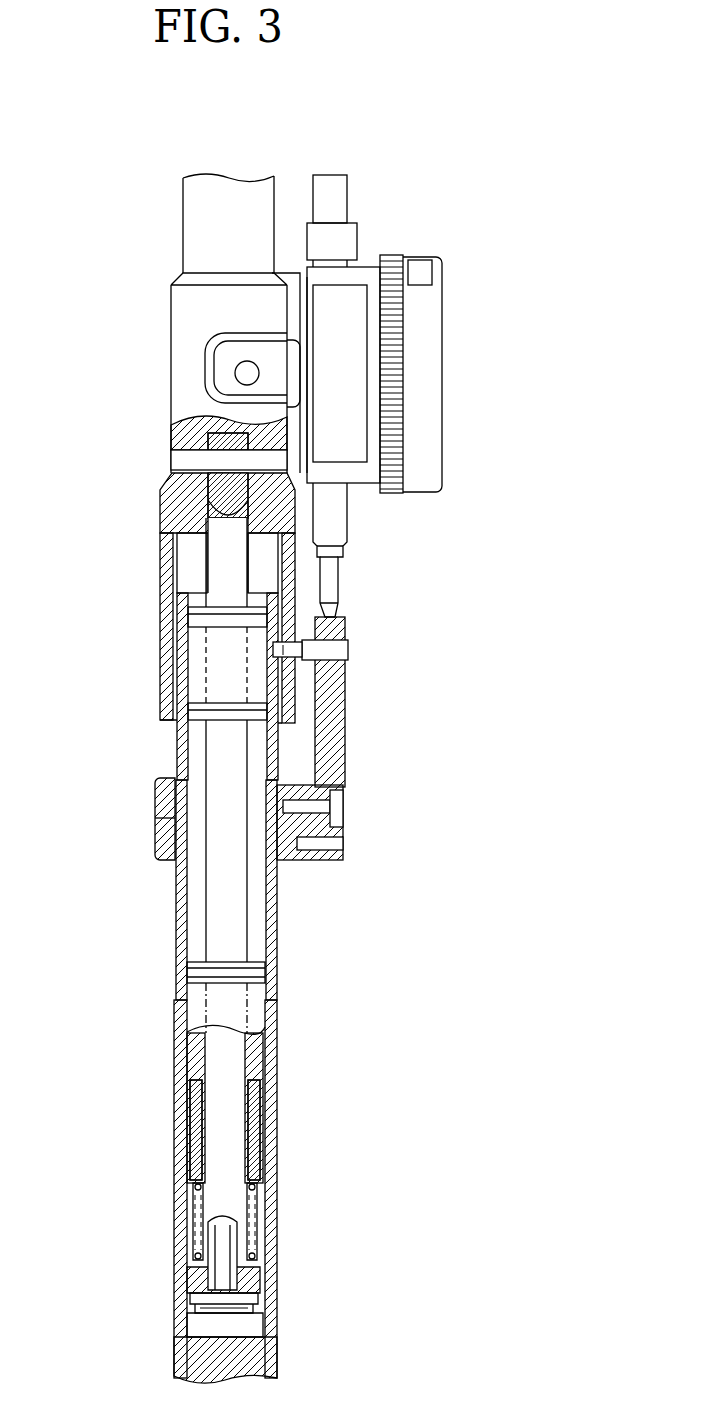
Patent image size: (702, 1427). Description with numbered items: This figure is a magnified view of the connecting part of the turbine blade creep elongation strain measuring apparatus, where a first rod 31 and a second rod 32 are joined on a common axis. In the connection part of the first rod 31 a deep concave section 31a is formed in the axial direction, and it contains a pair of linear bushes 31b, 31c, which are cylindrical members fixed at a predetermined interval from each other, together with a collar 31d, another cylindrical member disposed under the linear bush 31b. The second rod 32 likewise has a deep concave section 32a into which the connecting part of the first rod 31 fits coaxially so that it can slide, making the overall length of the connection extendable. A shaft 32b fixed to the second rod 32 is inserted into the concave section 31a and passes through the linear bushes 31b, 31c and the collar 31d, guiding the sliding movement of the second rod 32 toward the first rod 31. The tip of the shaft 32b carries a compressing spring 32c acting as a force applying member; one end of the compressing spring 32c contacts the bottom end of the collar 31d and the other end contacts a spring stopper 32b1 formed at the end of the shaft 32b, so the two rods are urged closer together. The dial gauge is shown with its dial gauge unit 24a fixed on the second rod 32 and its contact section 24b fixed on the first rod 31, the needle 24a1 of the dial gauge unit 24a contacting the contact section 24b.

The dial gauge unit 24a is at (430, 372).
The needle 24a1 is at (333, 583).
The contact section 24b is at (343, 752).
The first rod 31 is at (173, 1050).
The concave section 31a is at (198, 905).
The linear bush 31b is at (250, 962).
The linear bush 31c is at (197, 733).
The collar 31d is at (263, 1127).
The second rod 32 is at (170, 373).
The concave section 32a is at (193, 551).
The shaft 32b is at (233, 897).
The spring stopper 32b1 is at (257, 1282).
The compressing spring 32c is at (250, 1193).